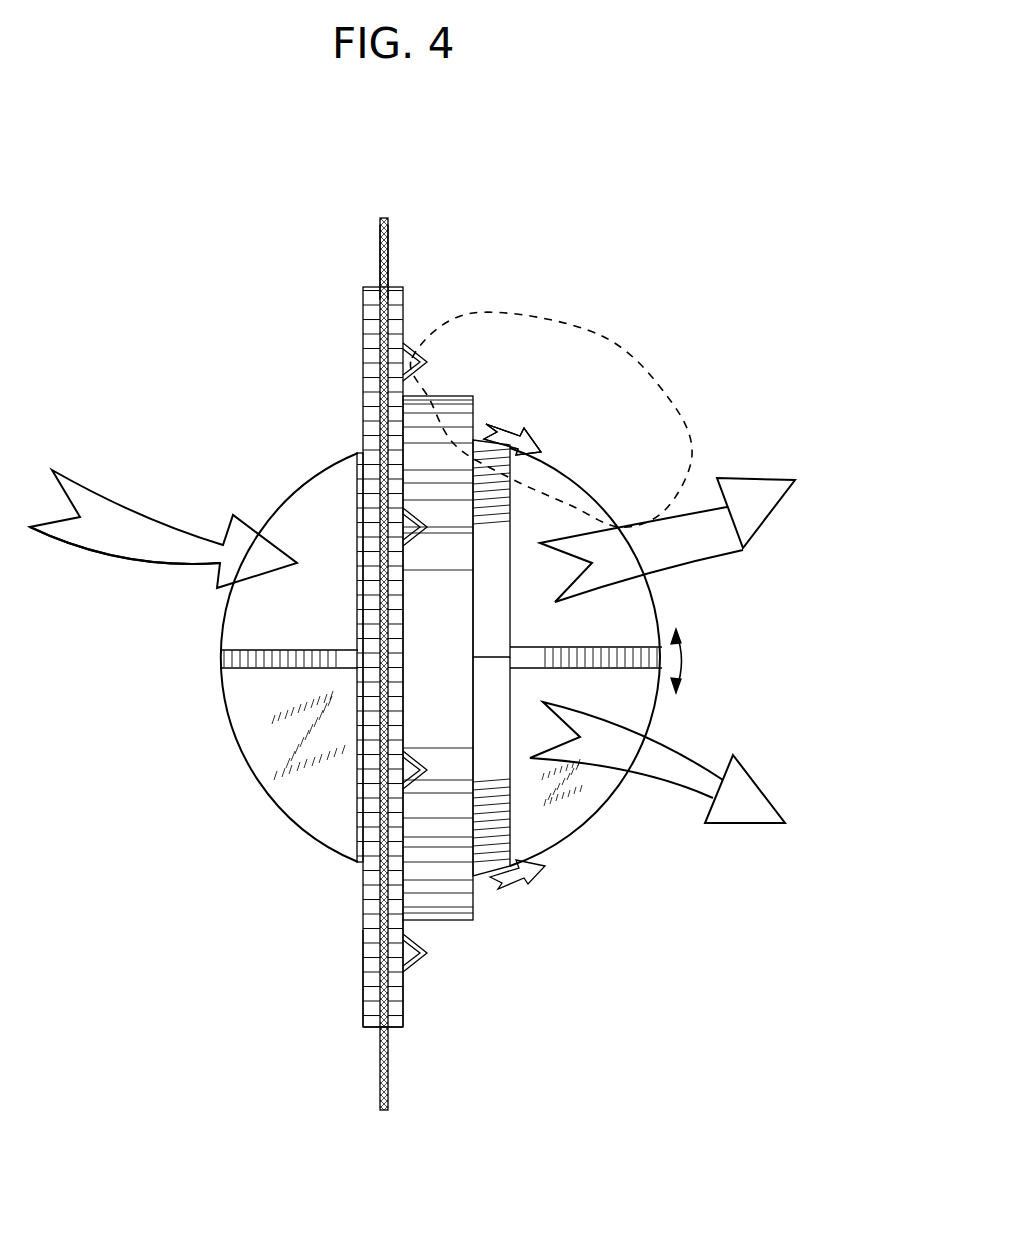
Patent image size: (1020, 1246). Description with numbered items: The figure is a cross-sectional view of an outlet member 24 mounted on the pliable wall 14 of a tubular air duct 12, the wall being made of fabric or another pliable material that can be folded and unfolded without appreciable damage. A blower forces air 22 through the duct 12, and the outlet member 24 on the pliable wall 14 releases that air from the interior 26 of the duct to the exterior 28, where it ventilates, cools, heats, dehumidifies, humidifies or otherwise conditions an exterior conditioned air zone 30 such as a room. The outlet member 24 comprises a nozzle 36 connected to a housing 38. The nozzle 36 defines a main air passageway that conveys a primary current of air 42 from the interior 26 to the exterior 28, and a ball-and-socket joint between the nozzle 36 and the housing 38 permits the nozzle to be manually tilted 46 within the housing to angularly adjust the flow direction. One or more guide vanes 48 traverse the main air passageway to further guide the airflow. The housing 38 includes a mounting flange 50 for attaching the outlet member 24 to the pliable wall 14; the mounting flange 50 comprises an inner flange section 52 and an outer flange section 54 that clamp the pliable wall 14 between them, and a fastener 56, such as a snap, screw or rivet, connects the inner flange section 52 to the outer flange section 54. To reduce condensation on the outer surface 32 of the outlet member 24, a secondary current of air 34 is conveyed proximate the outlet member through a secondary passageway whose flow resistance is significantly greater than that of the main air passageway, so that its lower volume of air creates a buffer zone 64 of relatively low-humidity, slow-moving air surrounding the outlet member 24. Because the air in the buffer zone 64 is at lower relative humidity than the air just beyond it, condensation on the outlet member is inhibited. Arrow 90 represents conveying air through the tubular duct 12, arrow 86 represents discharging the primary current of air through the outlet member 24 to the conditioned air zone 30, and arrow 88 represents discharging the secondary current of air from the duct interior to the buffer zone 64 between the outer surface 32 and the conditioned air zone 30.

The tubular air duct 12 is at (378, 247).
The pliable wall 14 is at (380, 265).
The air 22 is at (117, 505).
The outlet member 24 is at (403, 308).
The interior 26 is at (119, 679).
The exterior 28 is at (783, 636).
The exterior conditioned air zone 30 is at (783, 711).
The outer surface 32 is at (467, 957).
The secondary current of air 34 is at (505, 430).
The nozzle 36 is at (510, 818).
The housing 38 is at (510, 615).
The primary current of air 42 is at (743, 478).
The tilting 46 is at (683, 657).
The guide vane 48 is at (573, 668).
The mounting flange 50 is at (345, 1070).
The inner flange section 52 is at (363, 973).
The outer flange section 54 is at (403, 1012).
The fastener 56 is at (418, 537).
The buffer zone 64 is at (525, 325).
The arrow 86 is at (772, 521).
The arrow 88 is at (498, 425).
The arrow 90 is at (65, 545).